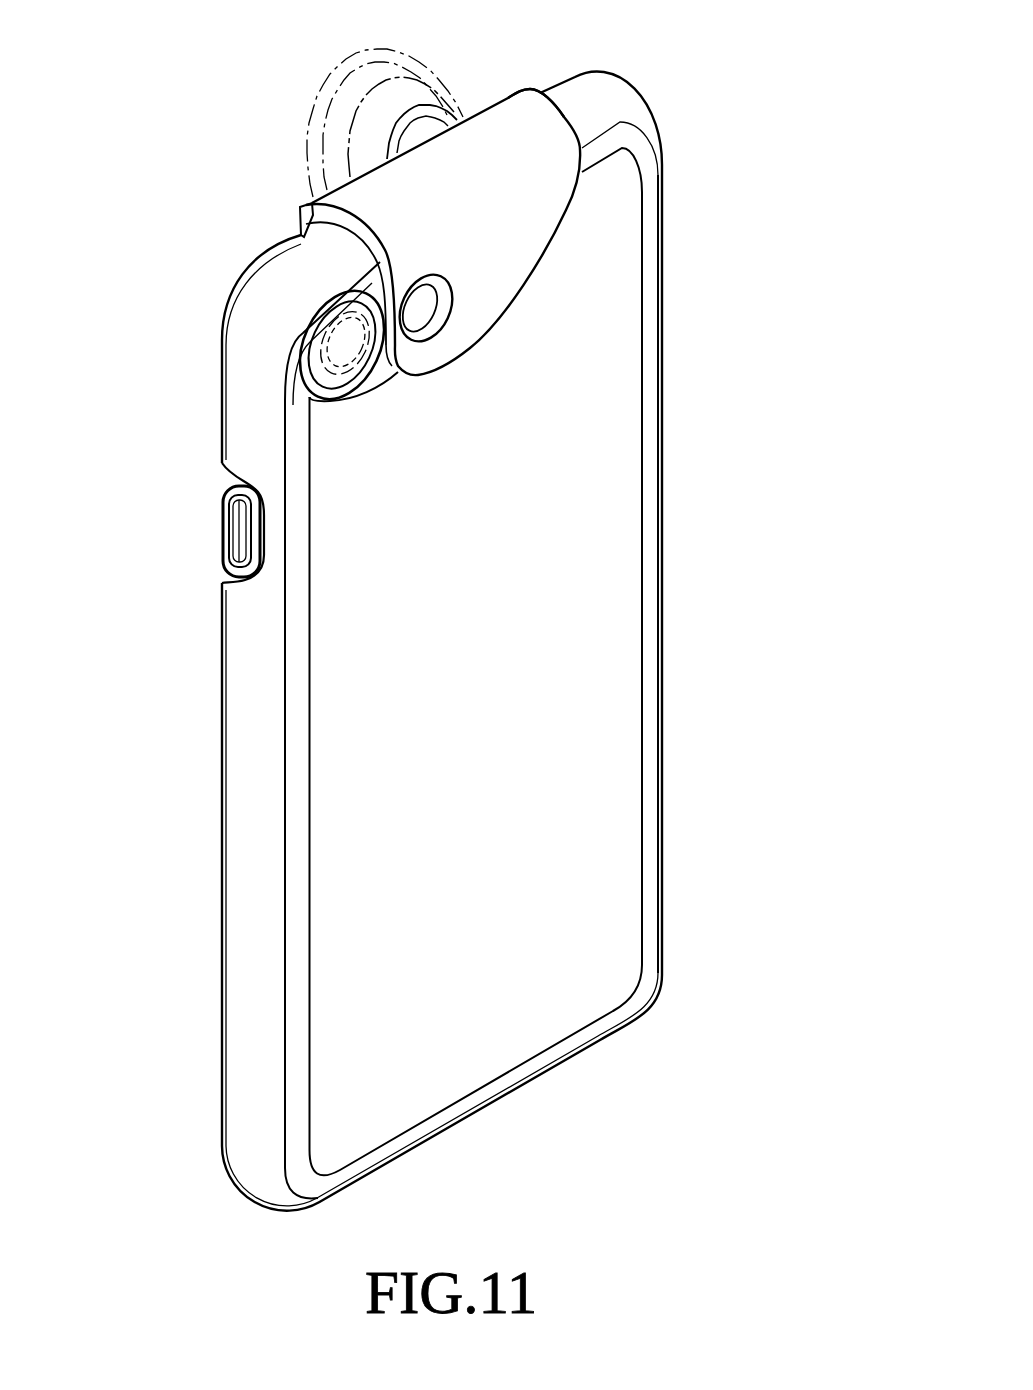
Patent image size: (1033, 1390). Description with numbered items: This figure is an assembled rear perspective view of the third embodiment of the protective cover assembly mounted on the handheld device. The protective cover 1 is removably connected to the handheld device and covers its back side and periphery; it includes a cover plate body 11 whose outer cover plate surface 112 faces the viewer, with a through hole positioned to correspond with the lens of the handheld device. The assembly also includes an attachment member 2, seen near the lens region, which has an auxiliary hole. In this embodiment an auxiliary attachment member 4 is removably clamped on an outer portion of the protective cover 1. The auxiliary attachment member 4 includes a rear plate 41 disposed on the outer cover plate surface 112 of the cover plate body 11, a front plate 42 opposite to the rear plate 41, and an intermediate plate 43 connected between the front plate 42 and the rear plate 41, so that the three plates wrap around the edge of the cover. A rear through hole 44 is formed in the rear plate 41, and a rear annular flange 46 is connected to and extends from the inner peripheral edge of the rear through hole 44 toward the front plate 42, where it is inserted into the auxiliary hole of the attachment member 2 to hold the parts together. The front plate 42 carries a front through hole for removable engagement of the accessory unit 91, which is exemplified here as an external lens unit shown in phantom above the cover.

The protective cover 1 is at (683, 828).
The outer cover plate surface 112 is at (541, 673).
The cover plate body 11 is at (605, 730).
The attachment member 2 is at (285, 344).
The auxiliary attachment member 4 is at (451, 195).
The rear plate 41 is at (527, 253).
The front plate 42 is at (300, 214).
The intermediate plate 43 is at (528, 127).
The rear through hole 44 is at (455, 297).
The rear annular flange 46 is at (430, 318).
The accessory unit 91 is at (345, 135).